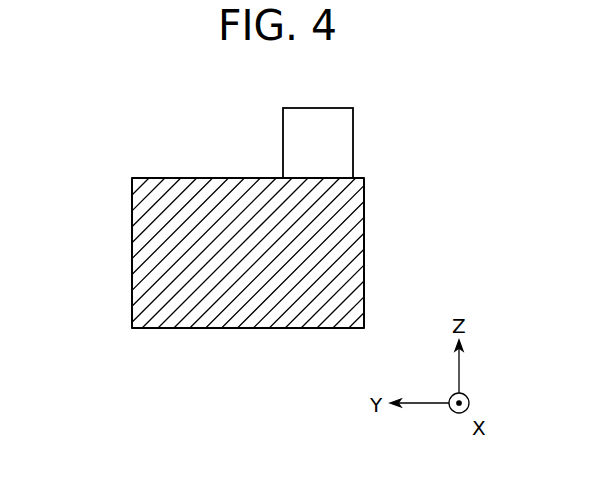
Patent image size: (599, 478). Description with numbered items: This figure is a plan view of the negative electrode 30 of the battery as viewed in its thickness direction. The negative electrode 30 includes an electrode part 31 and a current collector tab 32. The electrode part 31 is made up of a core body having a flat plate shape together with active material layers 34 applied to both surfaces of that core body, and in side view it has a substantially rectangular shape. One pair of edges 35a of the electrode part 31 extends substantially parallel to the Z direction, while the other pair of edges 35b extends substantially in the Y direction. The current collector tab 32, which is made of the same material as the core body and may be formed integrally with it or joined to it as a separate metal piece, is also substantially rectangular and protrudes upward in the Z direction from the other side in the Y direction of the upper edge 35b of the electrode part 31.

The negative electrode 30 is at (227, 128).
The electrode part 31 is at (147, 271).
The current collector tab 32 is at (318, 117).
The active material layers 34 is at (195, 310).
The edges 35a is at (132, 227).
The edges 35b is at (188, 178).